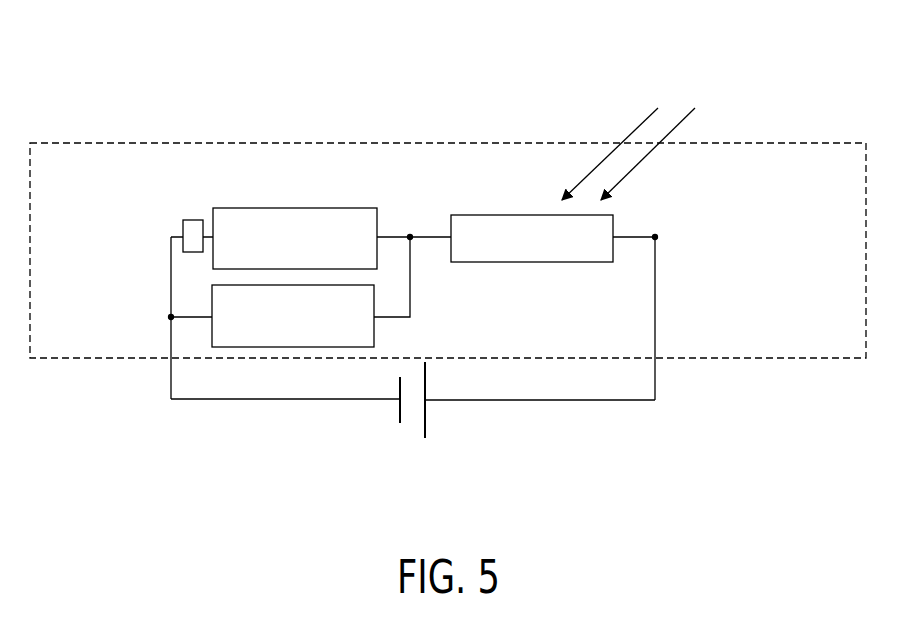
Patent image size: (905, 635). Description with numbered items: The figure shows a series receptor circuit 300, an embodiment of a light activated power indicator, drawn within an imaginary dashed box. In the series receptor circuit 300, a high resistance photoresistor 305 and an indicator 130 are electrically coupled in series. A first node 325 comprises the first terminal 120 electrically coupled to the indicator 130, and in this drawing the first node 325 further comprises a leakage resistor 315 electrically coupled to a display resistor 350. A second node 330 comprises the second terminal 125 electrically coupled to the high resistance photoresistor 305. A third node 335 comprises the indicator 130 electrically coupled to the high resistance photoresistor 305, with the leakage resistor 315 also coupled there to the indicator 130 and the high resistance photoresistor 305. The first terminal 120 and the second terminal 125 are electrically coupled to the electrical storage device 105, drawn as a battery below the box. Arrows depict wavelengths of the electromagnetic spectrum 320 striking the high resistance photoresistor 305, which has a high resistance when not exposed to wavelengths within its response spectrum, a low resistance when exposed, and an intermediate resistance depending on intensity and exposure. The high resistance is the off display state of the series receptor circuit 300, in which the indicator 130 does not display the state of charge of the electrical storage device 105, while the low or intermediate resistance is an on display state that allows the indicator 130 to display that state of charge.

The series receptor circuit 300 is at (138, 142).
The indicator 130 is at (297, 207).
The leakage resistor 315 is at (374, 327).
The high resistance photoresistor 305 is at (613, 226).
The display resistor 350 is at (183, 230).
The third node 335 is at (411, 234).
The first node 325 is at (171, 317).
The second node 330 is at (656, 237).
The first terminal 120 is at (357, 400).
The second terminal 125 is at (523, 400).
The electrical storage device 105 is at (429, 441).
The electromagnetic spectrum 320 is at (679, 85).